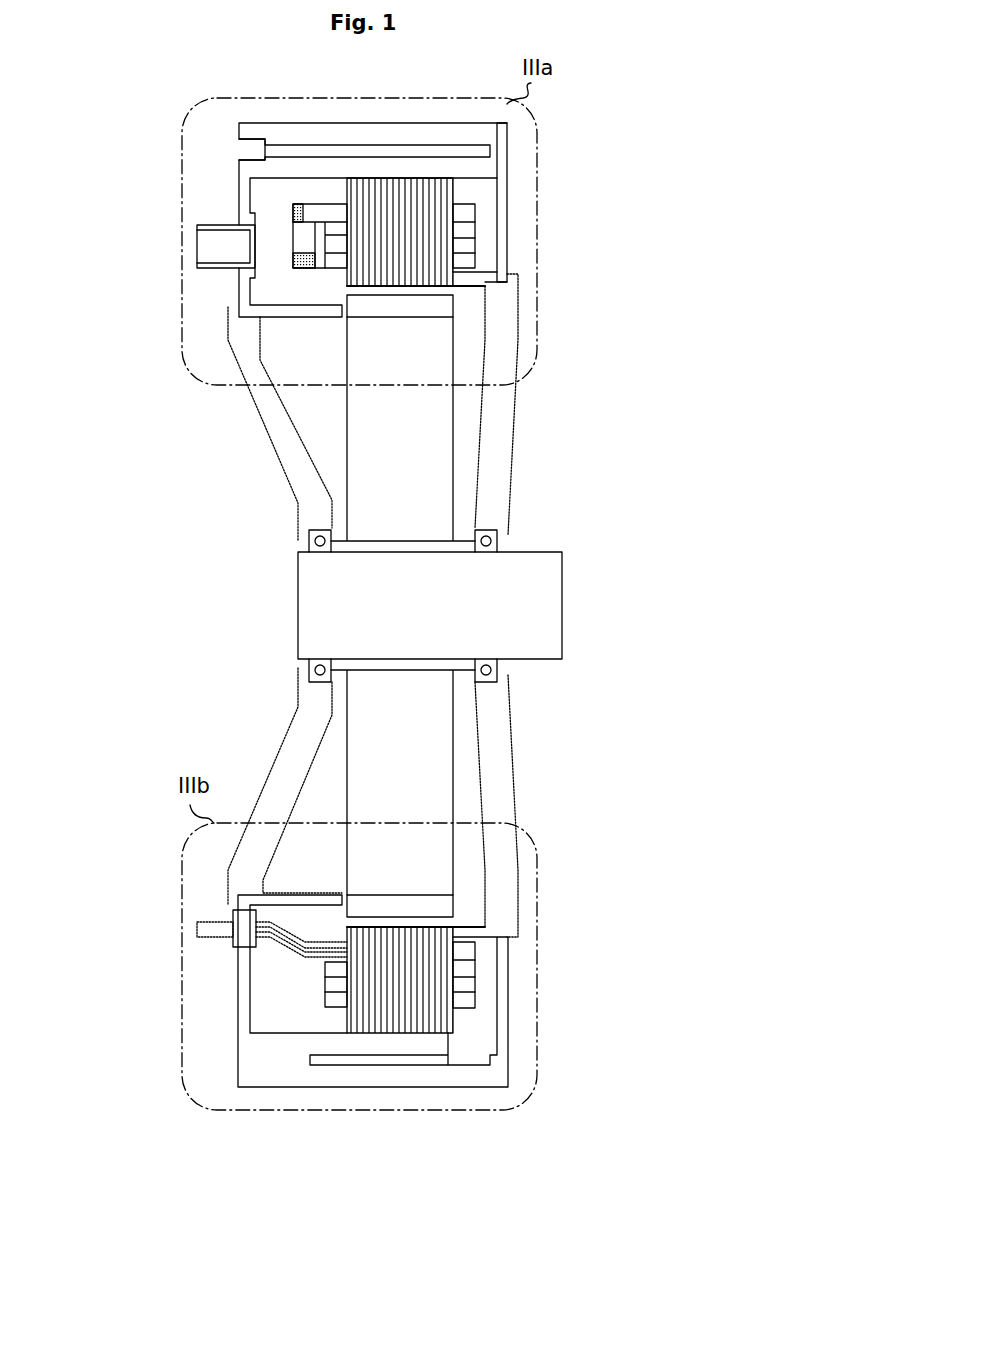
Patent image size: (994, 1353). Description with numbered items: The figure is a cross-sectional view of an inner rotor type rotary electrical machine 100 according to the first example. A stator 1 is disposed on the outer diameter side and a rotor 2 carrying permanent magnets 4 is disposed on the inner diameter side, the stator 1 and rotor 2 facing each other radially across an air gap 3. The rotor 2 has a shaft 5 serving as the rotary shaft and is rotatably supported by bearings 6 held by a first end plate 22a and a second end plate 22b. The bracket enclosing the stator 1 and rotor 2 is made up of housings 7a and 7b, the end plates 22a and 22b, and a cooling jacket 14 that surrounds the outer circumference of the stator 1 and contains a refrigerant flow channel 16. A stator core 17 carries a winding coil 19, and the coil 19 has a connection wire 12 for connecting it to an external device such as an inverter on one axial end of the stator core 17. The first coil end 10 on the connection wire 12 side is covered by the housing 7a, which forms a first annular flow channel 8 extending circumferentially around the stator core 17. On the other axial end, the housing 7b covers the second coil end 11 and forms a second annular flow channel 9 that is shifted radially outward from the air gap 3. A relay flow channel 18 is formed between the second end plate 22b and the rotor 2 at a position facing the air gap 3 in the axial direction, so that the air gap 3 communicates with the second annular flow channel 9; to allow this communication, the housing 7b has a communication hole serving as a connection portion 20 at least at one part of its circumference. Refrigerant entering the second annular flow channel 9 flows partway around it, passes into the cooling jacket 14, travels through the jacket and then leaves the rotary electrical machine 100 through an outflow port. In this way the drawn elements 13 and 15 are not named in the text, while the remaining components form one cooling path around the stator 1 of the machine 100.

The rotary electrical machine 100 is at (181, 614).
The stator 1 is at (515, 128).
The rotor 2 is at (455, 440).
The air gap 3 is at (378, 288).
The permanent magnet 4 is at (435, 310).
The shaft 5 is at (542, 607).
The bearing 6 is at (497, 535).
The housing 7a is at (240, 195).
The housing 7b is at (503, 198).
The first annular flow channel 8 is at (265, 285).
The second annular flow channel 9 is at (487, 246).
The first coil end 10 is at (330, 995).
The second coil end 11 is at (468, 998).
The connection wire 12 is at (305, 948).
The lead wire 13 is at (305, 268).
The cooling jacket 14 is at (440, 1080).
The connector 15 is at (210, 246).
The refrigerant flow channel 16 is at (245, 151).
The stator core 17 is at (440, 978).
The relay flow channel 18 is at (470, 296).
The winding coil 19 is at (455, 1005).
The connection portion 20 is at (470, 280).
The first end plate 22a is at (297, 483).
The second end plate 22b is at (510, 470).